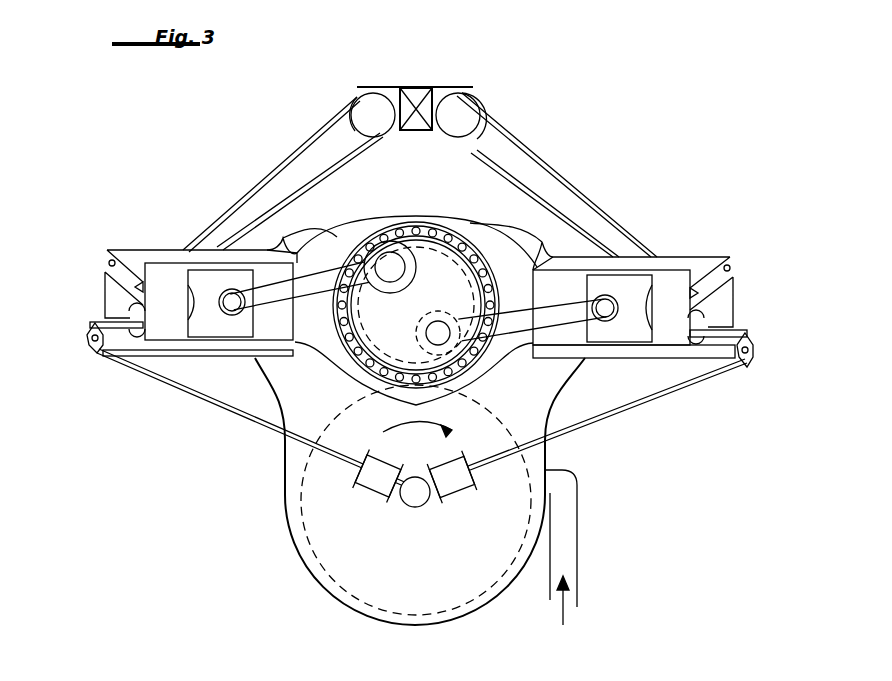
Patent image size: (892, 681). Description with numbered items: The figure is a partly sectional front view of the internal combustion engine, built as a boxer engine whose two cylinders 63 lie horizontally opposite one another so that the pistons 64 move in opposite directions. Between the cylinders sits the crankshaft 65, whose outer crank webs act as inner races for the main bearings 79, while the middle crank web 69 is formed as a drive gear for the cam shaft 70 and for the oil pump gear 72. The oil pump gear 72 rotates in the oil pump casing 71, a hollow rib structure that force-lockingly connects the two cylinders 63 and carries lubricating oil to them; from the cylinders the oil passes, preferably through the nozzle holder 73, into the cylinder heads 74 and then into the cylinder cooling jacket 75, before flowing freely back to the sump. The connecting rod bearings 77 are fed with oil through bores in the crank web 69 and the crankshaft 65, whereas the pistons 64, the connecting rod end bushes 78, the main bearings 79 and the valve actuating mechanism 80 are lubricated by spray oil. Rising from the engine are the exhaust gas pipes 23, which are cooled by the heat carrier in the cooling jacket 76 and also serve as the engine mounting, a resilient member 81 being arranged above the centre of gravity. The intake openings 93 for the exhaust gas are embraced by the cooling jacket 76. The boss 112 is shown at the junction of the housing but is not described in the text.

The exhaust gas pipes 23 is at (300, 158).
The cylinders 63 is at (283, 355).
The pistons 64 is at (252, 322).
The crankshaft 65 is at (440, 330).
The middle crank web 69 is at (440, 245).
The cam shaft 70 is at (413, 503).
The oil pump casing 71 is at (504, 592).
The oil pump gear 72 is at (310, 502).
The nozzle holder 73 is at (108, 264).
The cylinder heads 74 is at (112, 305).
The cylinder cooling jacket 75 is at (167, 252).
The cooling jacket 76 is at (252, 192).
The connecting rod bearings 77 is at (452, 364).
The connecting rod end bushes 78 is at (232, 312).
The main bearings 79 is at (392, 262).
The valve actuating mechanism 80 is at (92, 352).
The resilient member 81 is at (418, 86).
The intake openings 93 is at (375, 103).
The boss 112 is at (283, 238).